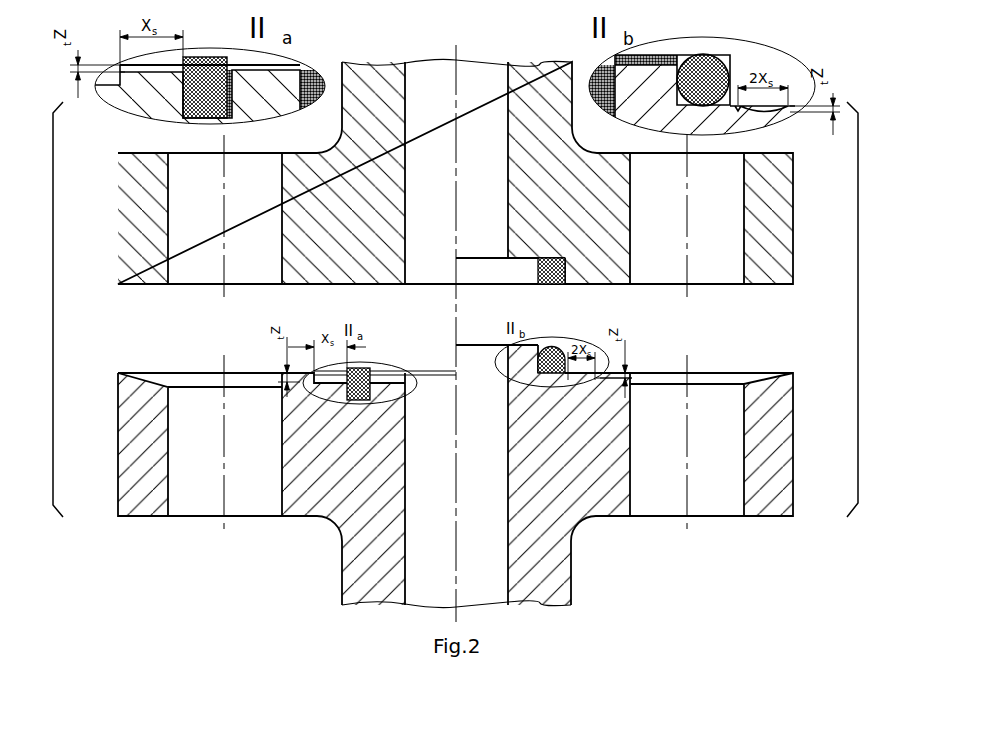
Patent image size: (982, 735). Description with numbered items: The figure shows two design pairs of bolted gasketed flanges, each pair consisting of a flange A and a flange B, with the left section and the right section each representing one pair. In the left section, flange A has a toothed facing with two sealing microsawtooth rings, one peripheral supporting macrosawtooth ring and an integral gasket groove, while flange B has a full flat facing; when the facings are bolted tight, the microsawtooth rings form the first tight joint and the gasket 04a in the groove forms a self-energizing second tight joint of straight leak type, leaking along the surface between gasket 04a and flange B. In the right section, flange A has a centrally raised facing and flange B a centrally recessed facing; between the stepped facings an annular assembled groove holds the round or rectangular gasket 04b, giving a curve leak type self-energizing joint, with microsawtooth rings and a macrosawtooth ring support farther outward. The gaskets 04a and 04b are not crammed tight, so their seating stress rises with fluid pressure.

The gasket 04a is at (414, 366).
The gasket 04b is at (488, 343).
The flange A is at (794, 477).
The flange B is at (794, 219).